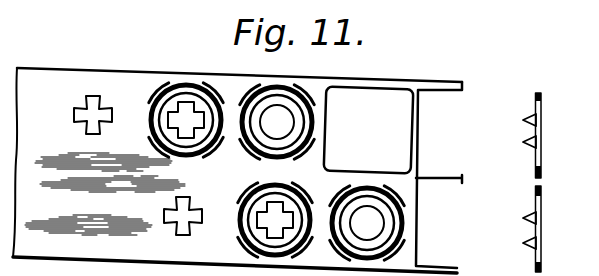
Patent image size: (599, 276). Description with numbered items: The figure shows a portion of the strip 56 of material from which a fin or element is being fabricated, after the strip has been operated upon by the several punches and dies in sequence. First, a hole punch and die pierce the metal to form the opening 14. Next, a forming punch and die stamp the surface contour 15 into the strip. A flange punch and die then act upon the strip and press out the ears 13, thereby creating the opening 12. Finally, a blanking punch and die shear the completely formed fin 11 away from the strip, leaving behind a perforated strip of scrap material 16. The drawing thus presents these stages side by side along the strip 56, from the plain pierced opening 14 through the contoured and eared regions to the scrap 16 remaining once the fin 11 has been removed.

The strip 56 is at (50, 73).
The opening 14 is at (98, 97).
The surface contour 15 is at (180, 87).
The ears 13 is at (531, 121).
The opening 12 is at (283, 107).
The perforated strip of scrap material 16 is at (459, 83).
The fin 11 is at (542, 119).